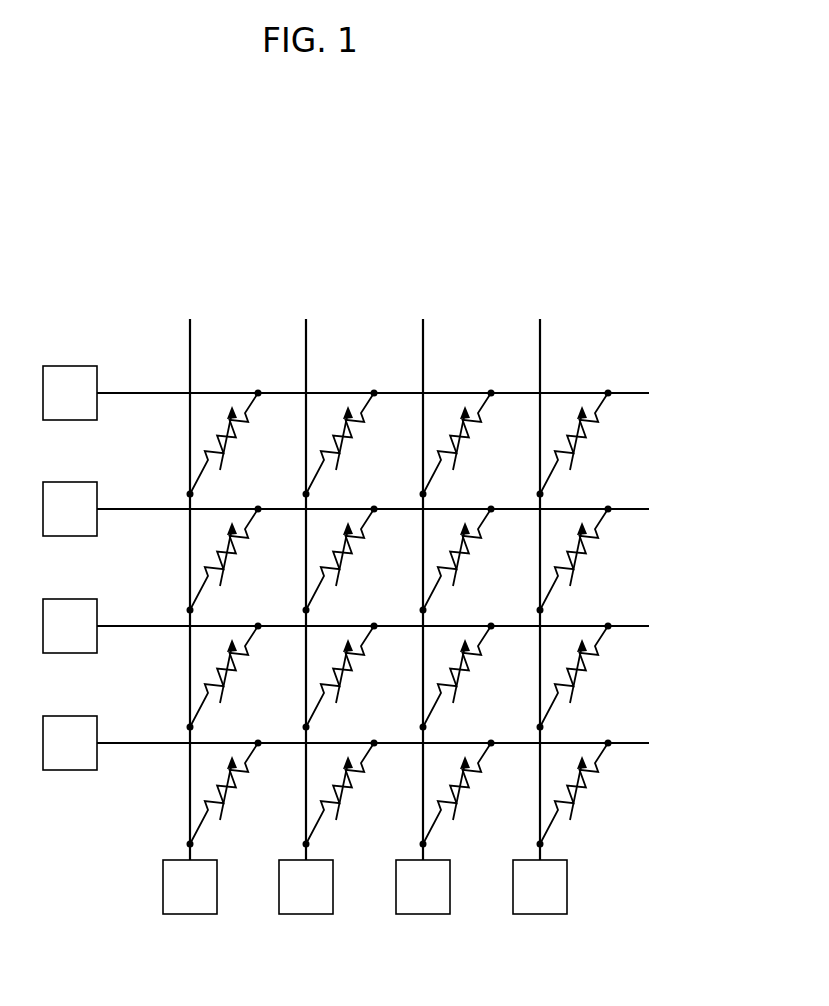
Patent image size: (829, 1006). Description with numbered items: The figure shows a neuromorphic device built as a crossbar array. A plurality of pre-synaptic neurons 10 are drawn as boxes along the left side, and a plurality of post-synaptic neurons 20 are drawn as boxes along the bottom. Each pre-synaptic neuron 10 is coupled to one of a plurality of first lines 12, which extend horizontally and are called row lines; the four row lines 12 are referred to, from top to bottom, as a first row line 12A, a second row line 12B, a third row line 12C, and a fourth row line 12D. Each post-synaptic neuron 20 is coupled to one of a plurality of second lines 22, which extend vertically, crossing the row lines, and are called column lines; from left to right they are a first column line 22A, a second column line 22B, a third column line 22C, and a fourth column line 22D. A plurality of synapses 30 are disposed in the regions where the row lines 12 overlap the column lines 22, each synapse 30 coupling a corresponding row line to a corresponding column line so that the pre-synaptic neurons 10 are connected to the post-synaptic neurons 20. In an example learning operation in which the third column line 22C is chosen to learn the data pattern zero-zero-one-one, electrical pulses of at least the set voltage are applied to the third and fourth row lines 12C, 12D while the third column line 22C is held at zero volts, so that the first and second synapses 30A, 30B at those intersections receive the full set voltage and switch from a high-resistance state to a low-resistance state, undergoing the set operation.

The pre-synaptic neurons 10 is at (70, 365).
The first lines 12 is at (373, 528).
The first row line 12A is at (158, 390).
The second row line 12B is at (140, 506).
The third row line 12C is at (140, 623).
The fourth row line 12D is at (140, 740).
The post-synaptic neurons 20 is at (163, 887).
The second lines 22 is at (335, 580).
The first column line 22A is at (188, 820).
The second column line 22B is at (304, 820).
The third column line 22C is at (421, 820).
The fourth column line 22D is at (538, 812).
The synapses 30 is at (207, 432).
The first synapse 30A is at (484, 677).
The second synapse 30B is at (484, 794).